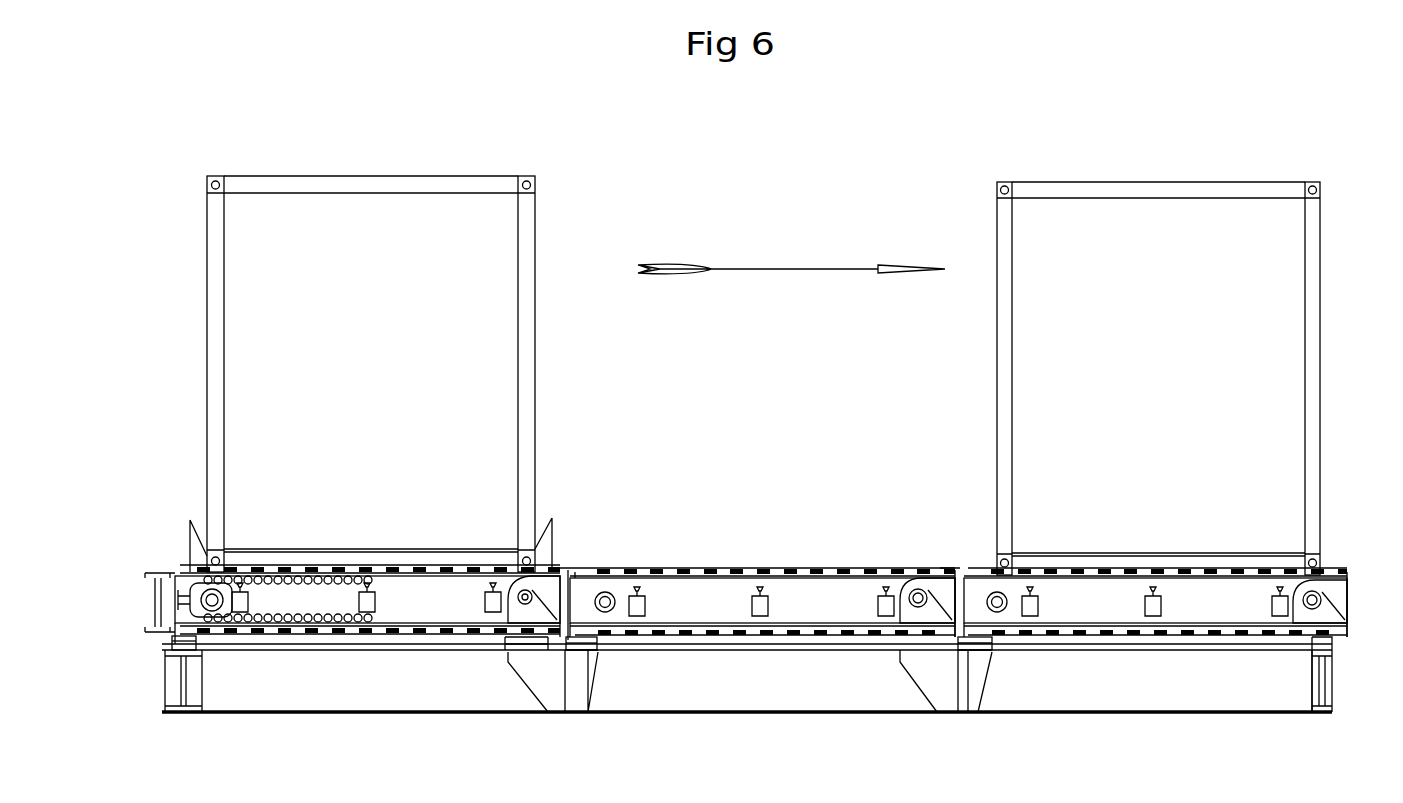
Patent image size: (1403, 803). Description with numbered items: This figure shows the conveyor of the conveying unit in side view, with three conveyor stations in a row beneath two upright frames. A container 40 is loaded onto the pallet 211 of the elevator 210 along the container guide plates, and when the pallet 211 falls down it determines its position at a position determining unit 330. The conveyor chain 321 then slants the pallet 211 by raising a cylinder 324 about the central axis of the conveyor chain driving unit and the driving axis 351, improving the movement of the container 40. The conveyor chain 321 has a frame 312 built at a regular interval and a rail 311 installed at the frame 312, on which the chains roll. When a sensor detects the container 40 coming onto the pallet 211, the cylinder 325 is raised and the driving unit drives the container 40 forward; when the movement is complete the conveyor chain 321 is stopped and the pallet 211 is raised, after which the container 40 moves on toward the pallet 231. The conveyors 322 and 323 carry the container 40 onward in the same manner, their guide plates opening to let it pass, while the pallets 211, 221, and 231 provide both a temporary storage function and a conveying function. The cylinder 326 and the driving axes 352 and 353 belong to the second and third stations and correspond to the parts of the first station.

The container 40 is at (510, 272).
The elevator 210 is at (547, 499).
The pallet 211 is at (568, 572).
The pallet 221 is at (942, 570).
The pallet 231 is at (1333, 573).
The rail 311 is at (367, 586).
The frame 312 is at (373, 618).
The conveyor chain 321 is at (322, 565).
The conveyor 322 is at (716, 566).
The conveyor 323 is at (1160, 567).
The cylinder 324 is at (185, 640).
The cylinder 325 is at (587, 645).
The third support 326 is at (973, 637).
The position determining unit 330 is at (507, 650).
The driving axis 351 is at (521, 592).
The second coupling hook 352 is at (915, 592).
The third coupling hook 353 is at (1308, 594).